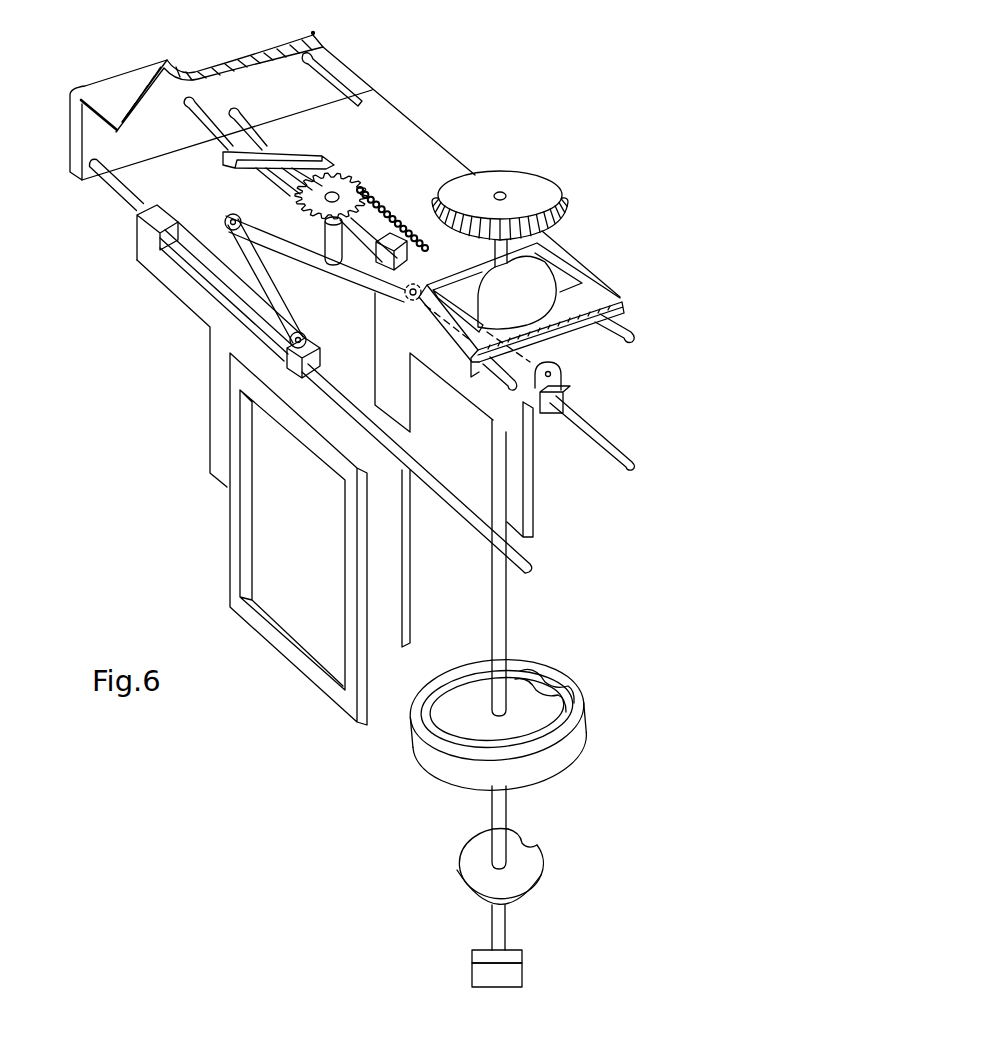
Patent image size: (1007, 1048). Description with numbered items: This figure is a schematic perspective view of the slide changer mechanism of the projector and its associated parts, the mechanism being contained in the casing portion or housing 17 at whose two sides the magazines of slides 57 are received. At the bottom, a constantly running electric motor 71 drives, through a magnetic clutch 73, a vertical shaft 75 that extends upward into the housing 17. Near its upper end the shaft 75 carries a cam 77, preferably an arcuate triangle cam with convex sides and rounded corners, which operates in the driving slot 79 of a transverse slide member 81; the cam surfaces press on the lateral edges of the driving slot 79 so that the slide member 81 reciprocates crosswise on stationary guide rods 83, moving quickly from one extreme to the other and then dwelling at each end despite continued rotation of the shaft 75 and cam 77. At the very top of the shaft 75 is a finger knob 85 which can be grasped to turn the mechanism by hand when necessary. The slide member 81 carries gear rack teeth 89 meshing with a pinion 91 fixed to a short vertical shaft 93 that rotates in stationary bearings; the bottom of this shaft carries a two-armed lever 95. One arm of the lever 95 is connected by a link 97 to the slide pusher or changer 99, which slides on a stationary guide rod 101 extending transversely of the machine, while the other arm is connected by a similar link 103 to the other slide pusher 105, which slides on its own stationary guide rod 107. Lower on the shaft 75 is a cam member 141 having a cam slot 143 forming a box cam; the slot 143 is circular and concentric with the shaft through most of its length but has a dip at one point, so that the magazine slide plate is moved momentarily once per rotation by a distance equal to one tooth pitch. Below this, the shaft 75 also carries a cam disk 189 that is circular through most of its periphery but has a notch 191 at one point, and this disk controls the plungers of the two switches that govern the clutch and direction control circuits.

The housing 17 is at (243, 62).
The slides 57 is at (245, 513).
The electric motor 71 is at (518, 978).
The magnetic clutch 73 is at (518, 955).
The vertical shaft 75 is at (498, 644).
The cam 77 is at (548, 272).
The driving slot 79 is at (593, 287).
The transverse slide member 81 is at (400, 130).
The stationary guide rods 83 is at (279, 83).
The finger knob 85 is at (486, 173).
The gear rack teeth 89 is at (387, 212).
The pinion 91 is at (298, 197).
The short vertical shaft 93 is at (325, 245).
The two-armed lever 95 is at (350, 268).
The link 97 is at (555, 362).
The slide pusher 99 is at (407, 400).
The stationary guide rod 101 is at (583, 421).
The link 103 is at (277, 292).
The slide pusher 105 is at (207, 322).
The stationary guide rod 107 is at (471, 516).
The cam member 141 is at (557, 665).
The cam slot 143 is at (573, 703).
The cam disk 189 is at (540, 872).
The notch 191 is at (522, 835).